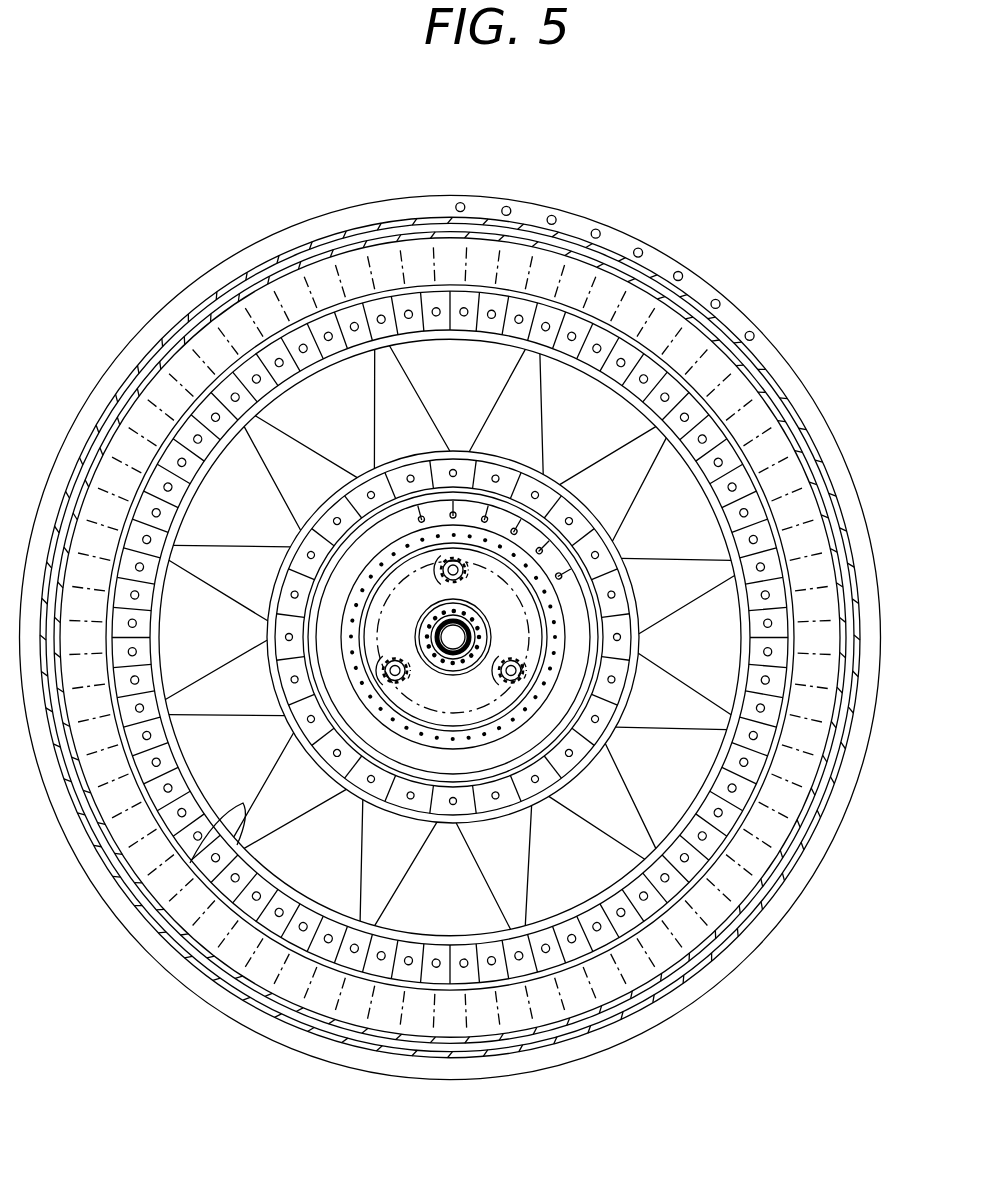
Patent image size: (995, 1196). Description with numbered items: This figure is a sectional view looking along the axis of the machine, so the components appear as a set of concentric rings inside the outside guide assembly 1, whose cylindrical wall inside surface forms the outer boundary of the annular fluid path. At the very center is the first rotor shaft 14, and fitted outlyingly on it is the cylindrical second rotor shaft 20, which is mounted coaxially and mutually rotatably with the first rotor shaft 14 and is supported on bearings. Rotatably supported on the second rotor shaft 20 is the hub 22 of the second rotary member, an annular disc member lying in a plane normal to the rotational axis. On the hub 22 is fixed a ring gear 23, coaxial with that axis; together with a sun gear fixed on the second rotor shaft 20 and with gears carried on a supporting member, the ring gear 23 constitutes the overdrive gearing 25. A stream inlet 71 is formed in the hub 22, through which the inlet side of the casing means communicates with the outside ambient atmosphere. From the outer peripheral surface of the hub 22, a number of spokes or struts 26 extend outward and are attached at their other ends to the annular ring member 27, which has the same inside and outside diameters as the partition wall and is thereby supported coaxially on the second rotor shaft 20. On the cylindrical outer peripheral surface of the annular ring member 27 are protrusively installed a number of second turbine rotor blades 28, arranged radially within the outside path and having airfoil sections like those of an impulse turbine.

The outside guide assembly 1 is at (322, 220).
The first rotor shaft 14 is at (462, 655).
The second rotor shaft 20 is at (427, 634).
The hub 22 is at (305, 553).
The ring gear 23 is at (507, 512).
The overdrive gearing 25 is at (352, 661).
The spokes or struts 26 is at (607, 458).
The annular ring member 27 is at (162, 342).
The second turbine rotor blades 28 is at (527, 206).
The stream inlet 71 is at (617, 537).